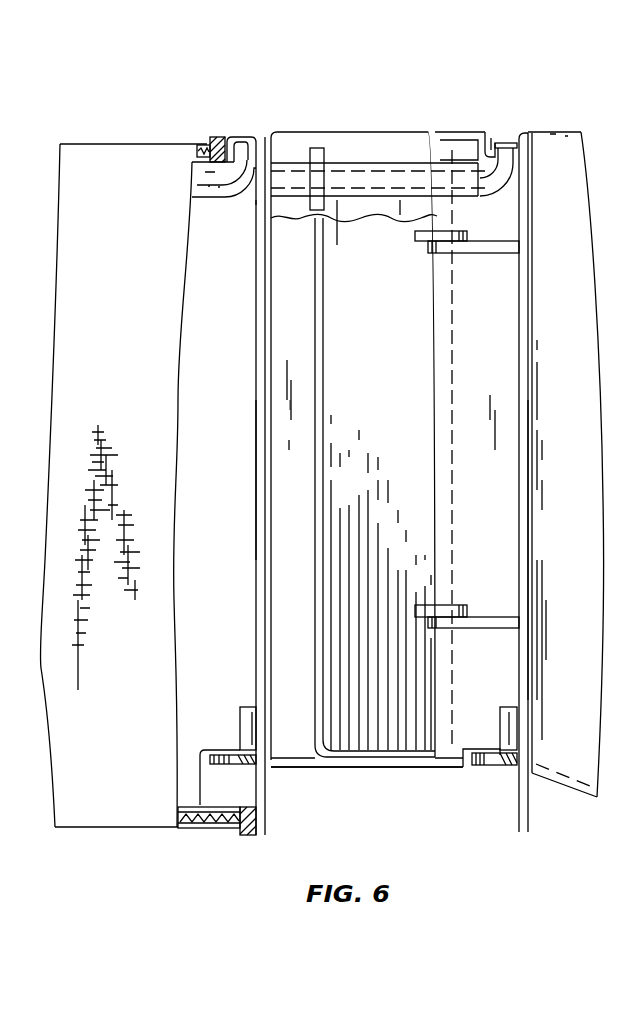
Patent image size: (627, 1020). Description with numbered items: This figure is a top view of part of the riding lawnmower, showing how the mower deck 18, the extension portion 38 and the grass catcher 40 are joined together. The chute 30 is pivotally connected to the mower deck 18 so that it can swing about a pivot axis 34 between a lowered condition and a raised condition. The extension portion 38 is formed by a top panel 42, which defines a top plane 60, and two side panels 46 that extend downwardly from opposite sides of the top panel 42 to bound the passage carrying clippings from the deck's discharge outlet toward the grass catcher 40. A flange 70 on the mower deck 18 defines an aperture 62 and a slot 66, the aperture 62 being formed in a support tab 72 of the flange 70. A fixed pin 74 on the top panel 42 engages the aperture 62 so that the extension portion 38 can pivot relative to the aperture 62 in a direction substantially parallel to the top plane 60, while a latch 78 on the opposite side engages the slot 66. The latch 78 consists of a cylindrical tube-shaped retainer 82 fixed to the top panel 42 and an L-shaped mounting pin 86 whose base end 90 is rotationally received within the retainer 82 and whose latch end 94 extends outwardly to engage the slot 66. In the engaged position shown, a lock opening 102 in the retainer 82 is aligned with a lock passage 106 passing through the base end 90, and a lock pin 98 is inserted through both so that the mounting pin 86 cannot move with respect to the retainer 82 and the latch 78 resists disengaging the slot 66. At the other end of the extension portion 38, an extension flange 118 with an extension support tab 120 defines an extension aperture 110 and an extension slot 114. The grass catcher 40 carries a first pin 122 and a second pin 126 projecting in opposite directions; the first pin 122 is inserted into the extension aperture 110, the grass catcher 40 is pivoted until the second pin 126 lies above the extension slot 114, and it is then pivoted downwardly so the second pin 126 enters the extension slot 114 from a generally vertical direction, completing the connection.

The mower deck 18 is at (562, 130).
The chute 30 is at (316, 582).
The pivot axis 34 is at (454, 343).
The extension portion 38 is at (356, 769).
The grass catcher 40 is at (150, 144).
The top panel 42 is at (283, 312).
The side panels 46 is at (383, 768).
The top plane 60 is at (308, 544).
The aperture 62 is at (503, 766).
The slot 66 is at (509, 136).
The flange 70 is at (528, 532).
The support tab 72 is at (488, 768).
The fixed pin 74 is at (500, 728).
The latch 78 is at (418, 153).
The retainer 82 is at (402, 200).
The mounting pin 86 is at (500, 193).
The base end 90 is at (373, 160).
The latch end 94 is at (500, 140).
The lock pin 98 is at (318, 147).
The lock opening 102 is at (325, 163).
The lock passage 106 is at (339, 252).
The extension aperture 110 is at (245, 768).
The extension slot 114 is at (244, 140).
The extension flange 118 is at (256, 480).
The extension support tab 120 is at (217, 766).
The first pin 122 is at (240, 726).
The second pin 126 is at (224, 137).